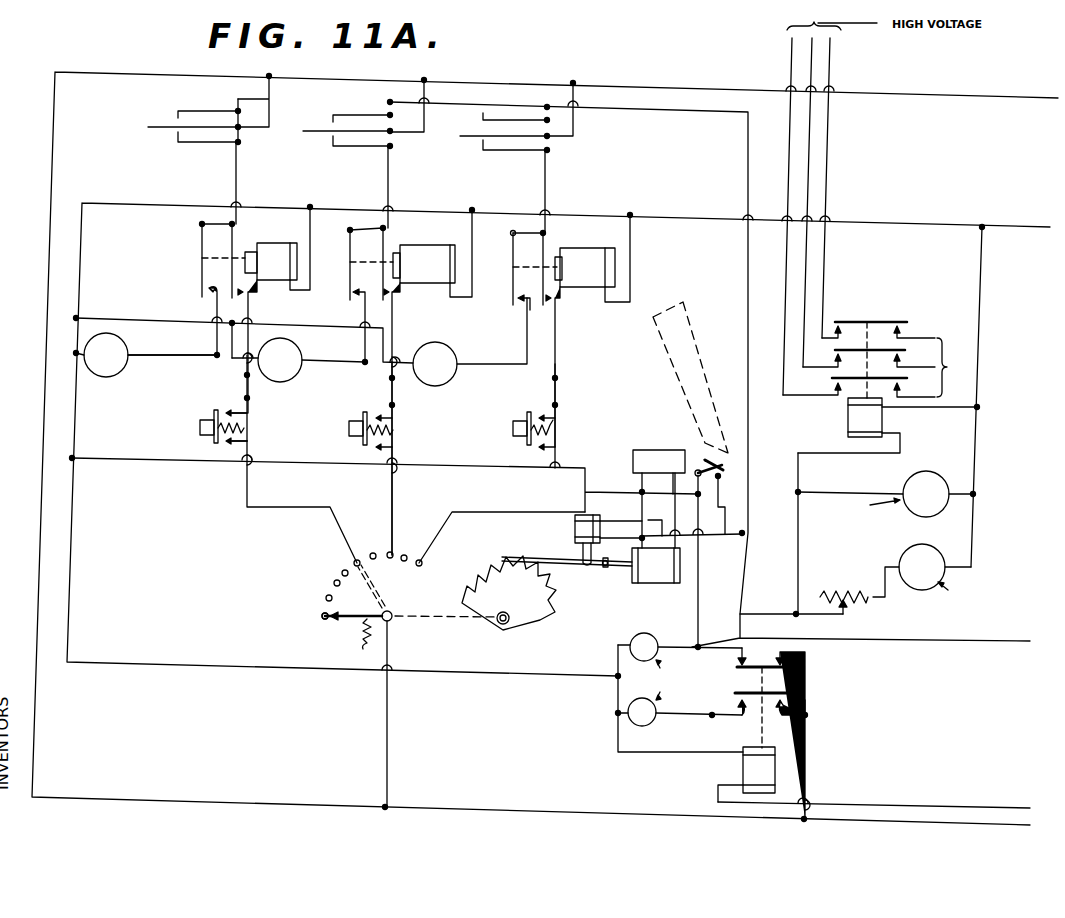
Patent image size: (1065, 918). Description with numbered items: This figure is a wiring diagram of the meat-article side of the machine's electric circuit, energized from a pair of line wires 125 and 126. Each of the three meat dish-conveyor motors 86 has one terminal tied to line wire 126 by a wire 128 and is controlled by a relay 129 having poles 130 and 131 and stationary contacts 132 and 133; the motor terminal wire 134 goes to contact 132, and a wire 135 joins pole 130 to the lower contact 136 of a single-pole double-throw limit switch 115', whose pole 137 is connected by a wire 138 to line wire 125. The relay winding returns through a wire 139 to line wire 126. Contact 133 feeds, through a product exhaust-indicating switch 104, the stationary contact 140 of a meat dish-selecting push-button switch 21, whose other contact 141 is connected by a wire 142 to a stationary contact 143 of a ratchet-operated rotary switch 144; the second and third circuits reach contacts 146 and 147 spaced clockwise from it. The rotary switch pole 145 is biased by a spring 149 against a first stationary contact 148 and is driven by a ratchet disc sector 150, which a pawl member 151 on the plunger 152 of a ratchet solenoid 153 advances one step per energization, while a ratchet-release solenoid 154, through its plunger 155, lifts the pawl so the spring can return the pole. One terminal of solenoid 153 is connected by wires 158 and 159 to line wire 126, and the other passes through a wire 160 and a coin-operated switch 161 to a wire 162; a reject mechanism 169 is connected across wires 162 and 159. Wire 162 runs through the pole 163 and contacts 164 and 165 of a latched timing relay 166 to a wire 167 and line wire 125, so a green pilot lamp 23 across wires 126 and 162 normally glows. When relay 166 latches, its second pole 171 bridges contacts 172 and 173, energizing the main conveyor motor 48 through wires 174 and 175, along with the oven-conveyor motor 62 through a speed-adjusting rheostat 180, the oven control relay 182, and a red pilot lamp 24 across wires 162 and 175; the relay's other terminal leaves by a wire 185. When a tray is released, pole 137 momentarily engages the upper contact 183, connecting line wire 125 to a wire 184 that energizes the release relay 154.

The meat dish-selecting push-button switch 21 is at (200, 432).
The pilot lamp 23 is at (630, 640).
The pilot lamp 24 is at (646, 718).
The main conveyor motor 48 is at (930, 471).
The oven-conveyor motor 62 is at (944, 552).
The meat dish-conveyor motor 86 is at (126, 365).
The product exhaust-indicating switch 104 is at (253, 412).
The limit switch 115' is at (407, 129).
The line wire 125 is at (915, 98).
The line wire 126 is at (935, 223).
The wire 128 is at (76, 357).
The relay 129 is at (276, 248).
The relay pole 130 is at (202, 247).
The relay pole 131 is at (234, 240).
The stationary contact 132 is at (208, 294).
The stationary contact 133 is at (254, 296).
The terminal wire 134 is at (160, 352).
The wire 135 is at (236, 183).
The lower contact 136 is at (178, 145).
The pole 137 is at (150, 129).
The wire 138 is at (269, 115).
The wire 139 is at (310, 262).
The stationary contact 140 is at (230, 413).
The stationary contact 141 is at (230, 444).
The wire 142 is at (272, 513).
The stationary contact 143 is at (345, 565).
The ratchet-operated rotary switch 144 is at (411, 593).
The rotary switch pole 145 is at (352, 622).
The stationary contact 146 is at (388, 550).
The stationary contact 147 is at (428, 560).
The first stationary contact 148 is at (322, 615).
The spring 149 is at (367, 670).
The ratchet disc sector 150 is at (523, 618).
The pawl member 151 is at (558, 572).
The plunger 152 is at (618, 572).
The ratchet solenoid 153 is at (658, 588).
The ratchet-release solenoid 154 is at (594, 520).
The plunger 155 is at (580, 545).
The wire 158 is at (640, 520).
The wire 159 is at (452, 468).
The wire 160 is at (720, 507).
The coin-operated switch 161 is at (708, 454).
The wire 162 is at (615, 750).
The pole 163 is at (742, 670).
The contact 164 is at (744, 660).
The contact 165 is at (808, 664).
The timing relay 166 is at (743, 768).
The wire 167 is at (806, 703).
The reject mechanism 169 is at (633, 453).
The pole 171 is at (765, 692).
The stationary contact 172 is at (736, 730).
The stationary contact 173 is at (784, 720).
The wire 174 is at (976, 474).
The wire 175 is at (798, 580).
The speed-adjusting rheostat 180 is at (849, 590).
The control relay 182 is at (848, 420).
The upper contact 183 is at (173, 115).
The wire 184 is at (628, 109).
The wire 185 is at (916, 805).